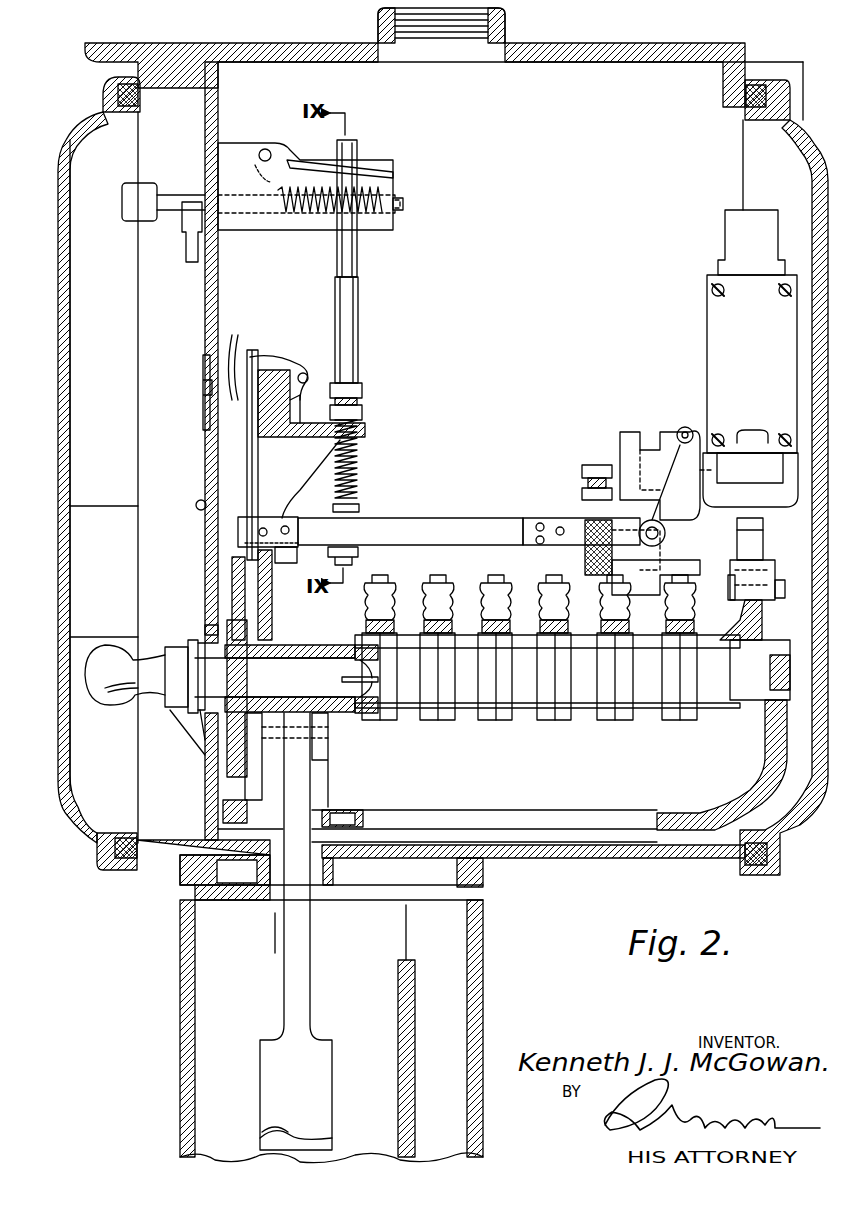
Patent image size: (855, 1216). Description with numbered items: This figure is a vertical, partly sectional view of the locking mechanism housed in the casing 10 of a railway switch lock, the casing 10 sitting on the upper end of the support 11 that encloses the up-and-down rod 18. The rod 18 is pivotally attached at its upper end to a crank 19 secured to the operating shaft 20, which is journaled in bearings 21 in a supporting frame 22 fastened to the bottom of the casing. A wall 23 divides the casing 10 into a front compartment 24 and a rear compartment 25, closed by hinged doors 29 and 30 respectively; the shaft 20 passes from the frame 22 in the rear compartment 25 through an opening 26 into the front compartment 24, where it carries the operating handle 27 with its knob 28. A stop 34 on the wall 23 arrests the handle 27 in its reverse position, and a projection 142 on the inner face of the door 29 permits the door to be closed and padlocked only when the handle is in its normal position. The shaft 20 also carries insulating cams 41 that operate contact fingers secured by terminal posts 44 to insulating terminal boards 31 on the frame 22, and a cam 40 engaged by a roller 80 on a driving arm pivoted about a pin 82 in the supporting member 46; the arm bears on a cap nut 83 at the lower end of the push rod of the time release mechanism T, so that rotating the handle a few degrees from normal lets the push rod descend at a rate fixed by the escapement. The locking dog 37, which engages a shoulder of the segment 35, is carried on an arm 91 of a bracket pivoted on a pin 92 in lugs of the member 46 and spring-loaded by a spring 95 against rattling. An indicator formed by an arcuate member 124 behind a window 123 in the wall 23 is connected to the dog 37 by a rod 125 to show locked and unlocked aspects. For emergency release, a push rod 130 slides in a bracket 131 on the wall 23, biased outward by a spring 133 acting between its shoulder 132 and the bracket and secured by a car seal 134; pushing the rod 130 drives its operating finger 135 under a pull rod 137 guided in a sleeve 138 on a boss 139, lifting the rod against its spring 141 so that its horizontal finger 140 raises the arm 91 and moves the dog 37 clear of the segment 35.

The casing 10 is at (592, 28).
The support 11 is at (483, 972).
The up-and-down rod 18 is at (318, 1092).
The crank 19 is at (325, 752).
The operating shaft 20 is at (358, 710).
The bearings 21 is at (772, 658).
The supporting frame 22 is at (766, 733).
The wall 23 is at (218, 277).
The front compartment 24 is at (164, 825).
The rear compartment 25 is at (590, 785).
The opening 26 is at (195, 715).
The operating member 27 is at (177, 647).
The knob 28 is at (108, 692).
The door 29 is at (70, 142).
The door 30 is at (812, 142).
The insulating terminal boards 31 is at (400, 632).
The stop 34 is at (190, 742).
The segment 35 is at (262, 625).
The locking dog 37 is at (290, 522).
The cam 40 is at (760, 625).
The insulating cams 41 is at (445, 720).
The terminal posts 44 is at (392, 583).
The supporting member 46 is at (696, 428).
The roller 80 is at (768, 562).
The pin 82 is at (788, 598).
The cap nut 83 is at (763, 535).
The arm 91 is at (443, 520).
The pin 92 is at (664, 562).
The spring 95 is at (667, 540).
The window 123 is at (203, 376).
The arcuate member 124 is at (240, 342).
The rod 125 is at (258, 355).
The push rod 130 is at (170, 195).
The bracket 131 is at (400, 181).
The shoulder 132 is at (279, 225).
The spring 133 is at (400, 204).
The car seal 134 is at (182, 235).
The operating finger 135 is at (360, 163).
The pull rod 137 is at (350, 262).
The sleeve 138 is at (358, 292).
The boss 139 is at (268, 440).
The horizontally projecting finger 140 is at (358, 553).
The spring 141 is at (357, 518).
The projection 142 is at (100, 637).
The time release mechanism T is at (698, 330).